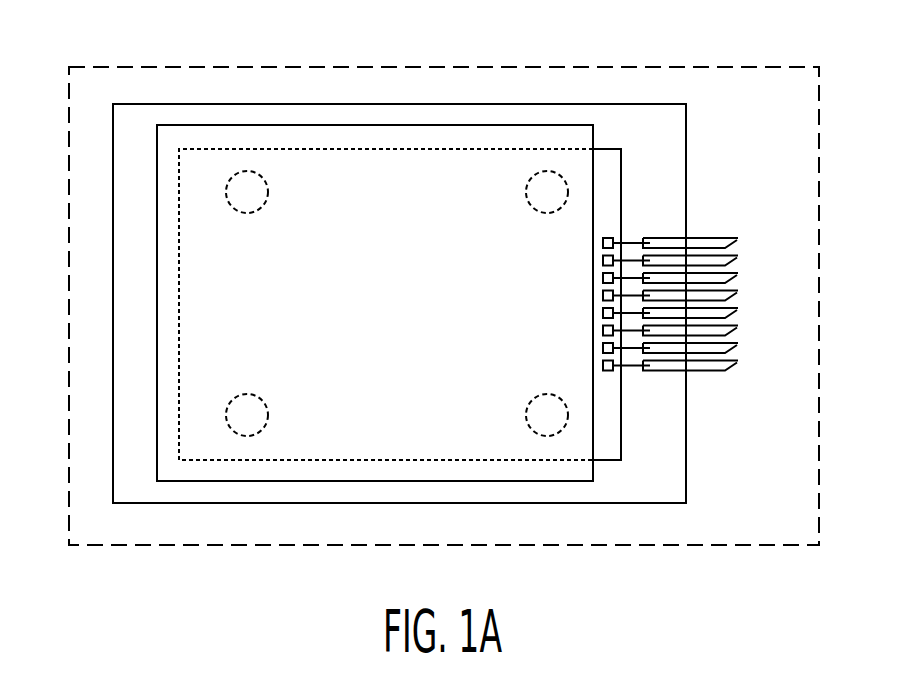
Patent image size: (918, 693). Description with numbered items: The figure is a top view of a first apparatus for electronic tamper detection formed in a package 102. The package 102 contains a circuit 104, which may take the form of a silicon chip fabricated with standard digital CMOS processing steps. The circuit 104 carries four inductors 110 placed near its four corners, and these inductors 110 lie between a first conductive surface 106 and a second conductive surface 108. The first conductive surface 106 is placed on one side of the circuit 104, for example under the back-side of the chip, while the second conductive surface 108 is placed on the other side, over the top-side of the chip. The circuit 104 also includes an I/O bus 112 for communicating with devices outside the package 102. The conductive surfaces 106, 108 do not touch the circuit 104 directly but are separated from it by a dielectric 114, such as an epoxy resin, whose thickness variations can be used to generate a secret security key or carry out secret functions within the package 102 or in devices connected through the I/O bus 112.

The package 102 is at (462, 67).
The circuit 104 is at (187, 148).
The first conductive surface 106 is at (113, 128).
The second conductive surface 108 is at (157, 464).
The inductors 110 is at (262, 207).
The I/O bus 112 is at (713, 240).
The dielectric 114 is at (757, 525).